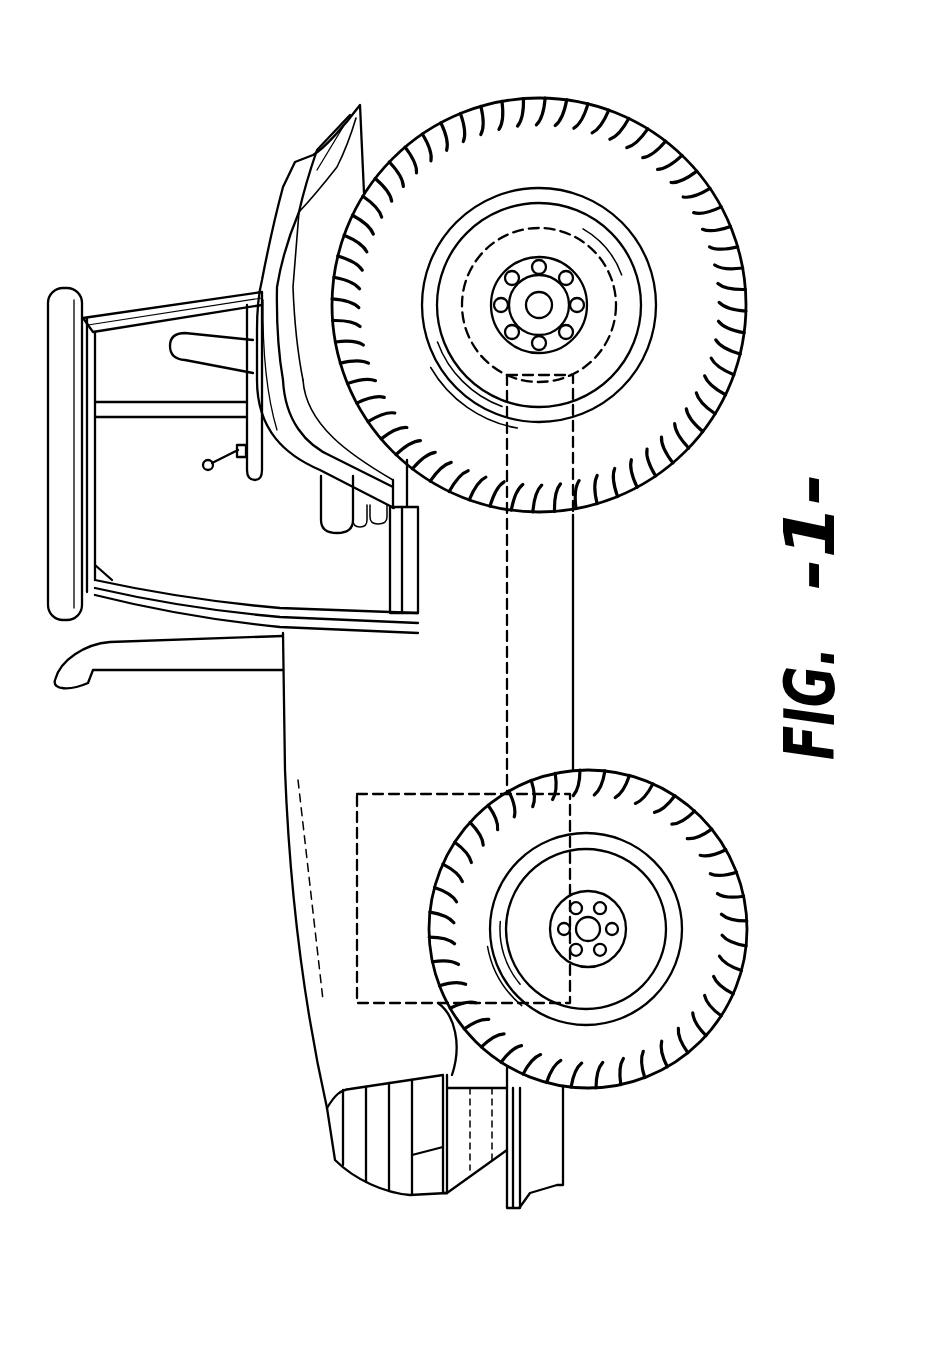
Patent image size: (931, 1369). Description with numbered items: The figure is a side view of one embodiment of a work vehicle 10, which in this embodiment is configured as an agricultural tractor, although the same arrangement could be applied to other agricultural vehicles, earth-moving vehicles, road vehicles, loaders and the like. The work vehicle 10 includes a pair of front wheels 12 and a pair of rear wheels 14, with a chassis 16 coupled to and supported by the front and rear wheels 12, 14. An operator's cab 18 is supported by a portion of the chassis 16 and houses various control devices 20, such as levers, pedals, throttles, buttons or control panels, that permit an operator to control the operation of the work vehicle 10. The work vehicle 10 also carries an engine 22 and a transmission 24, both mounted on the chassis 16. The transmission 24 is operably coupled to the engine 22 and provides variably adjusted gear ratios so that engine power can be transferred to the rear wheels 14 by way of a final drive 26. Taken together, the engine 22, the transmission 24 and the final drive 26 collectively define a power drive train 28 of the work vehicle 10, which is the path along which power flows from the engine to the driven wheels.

The work vehicle 10 is at (185, 1002).
The front wheels 12 is at (606, 1090).
The rear wheels 14 is at (573, 100).
The chassis 16 is at (575, 700).
The operator's cab 18 is at (178, 298).
The control devices 20 is at (204, 468).
The engine 22 is at (357, 927).
The transmission 24 is at (505, 632).
The final drive 26 is at (541, 229).
The power drive train 28 is at (315, 733).